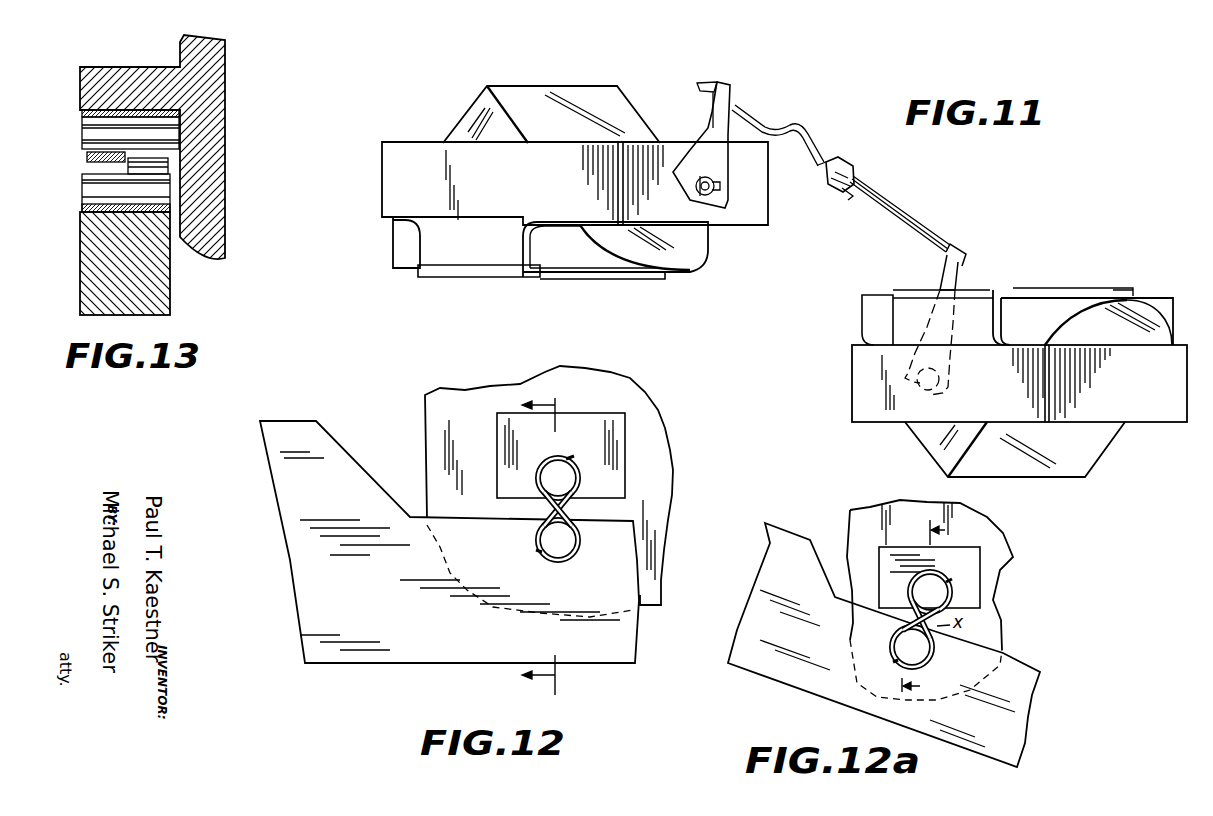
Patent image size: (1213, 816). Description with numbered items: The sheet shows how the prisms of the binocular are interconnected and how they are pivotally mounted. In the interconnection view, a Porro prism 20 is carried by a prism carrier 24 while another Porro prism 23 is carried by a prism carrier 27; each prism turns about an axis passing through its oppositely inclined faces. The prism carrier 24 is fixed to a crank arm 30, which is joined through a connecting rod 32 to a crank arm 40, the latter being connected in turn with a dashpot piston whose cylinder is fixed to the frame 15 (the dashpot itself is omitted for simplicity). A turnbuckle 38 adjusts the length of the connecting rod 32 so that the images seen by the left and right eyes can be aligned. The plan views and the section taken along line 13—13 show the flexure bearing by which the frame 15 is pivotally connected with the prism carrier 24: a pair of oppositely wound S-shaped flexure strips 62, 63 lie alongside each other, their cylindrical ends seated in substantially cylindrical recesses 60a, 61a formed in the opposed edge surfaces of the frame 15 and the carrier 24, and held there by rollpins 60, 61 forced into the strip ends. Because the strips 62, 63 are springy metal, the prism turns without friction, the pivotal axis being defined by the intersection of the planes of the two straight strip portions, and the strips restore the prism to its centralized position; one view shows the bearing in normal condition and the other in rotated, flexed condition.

In FIG. 12, the section line 13— 13 is at (537, 541).
In FIG. 12A, the section line 13— 13 is at (936, 608).
In FIG. 13, the frame 15 is at (86, 249).
In FIG. 12, the frame 15 is at (293, 560).
In FIG. 12A, the frame 15 is at (1030, 702).
In FIG. 11, the Porro prism 20 is at (946, 460).
In FIG. 11, the Porro prism 23 is at (473, 112).
In FIG. 13, the prism carrier 24 is at (225, 256).
In FIG. 11, the prism carrier 24 is at (990, 399).
In FIG. 12, the prism carrier 24 is at (480, 428).
In FIG. 12A, the prism carrier 24 is at (886, 566).
In FIG. 11, the prism carrier 27 is at (524, 193).
In FIG. 11, the crank arm 30 is at (938, 276).
In FIG. 11, the connecting rod 32 is at (884, 213).
In FIG. 11, the turnbuckle 38 is at (845, 164).
In FIG. 11, the crank arm 40 is at (708, 114).
In FIG. 13, the rollpin 60 is at (82, 116).
In FIG. 12, the rollpin 60 is at (545, 478).
In FIG. 12A, the rollpin 60 is at (940, 586).
In FIG. 12, the cylindrical recess 60a is at (562, 450).
In FIG. 12A, the cylindrical recess 60a is at (975, 592).
In FIG. 13, the rollpin 61 is at (172, 190).
In FIG. 12, the rollpin 61 is at (576, 552).
In FIG. 12A, the rollpin 61 is at (930, 656).
In FIG. 12, the cylindrical recess 61a is at (538, 548).
In FIG. 12A, the cylindrical recess 61a is at (896, 662).
In FIG. 13, the S-shaped flexure strip 62 is at (88, 159).
In FIG. 12, the S-shaped flexure strip 62 is at (548, 510).
In FIG. 12A, the S-shaped flexure strip 62 is at (940, 631).
In FIG. 13, the S-shaped flexure strip 63 is at (165, 167).
In FIG. 12, the S-shaped flexure strip 63 is at (570, 510).
In FIG. 12A, the S-shaped flexure strip 63 is at (905, 625).